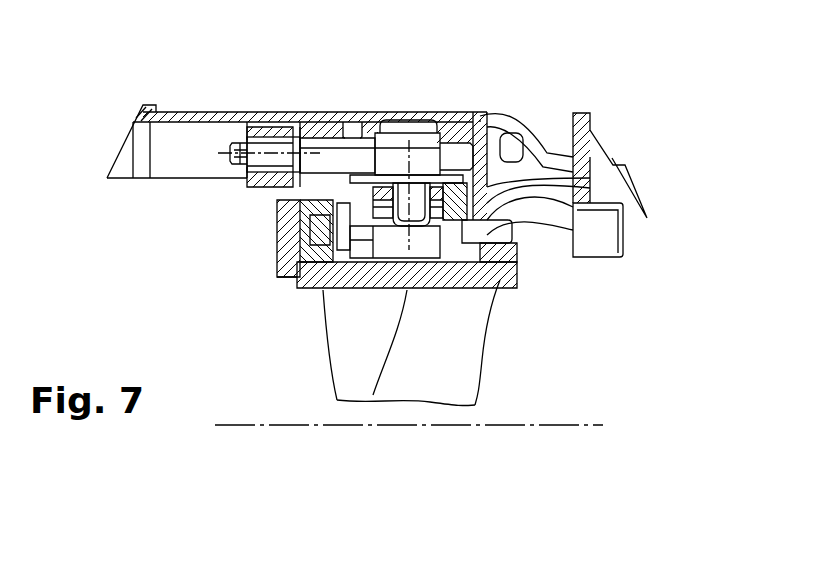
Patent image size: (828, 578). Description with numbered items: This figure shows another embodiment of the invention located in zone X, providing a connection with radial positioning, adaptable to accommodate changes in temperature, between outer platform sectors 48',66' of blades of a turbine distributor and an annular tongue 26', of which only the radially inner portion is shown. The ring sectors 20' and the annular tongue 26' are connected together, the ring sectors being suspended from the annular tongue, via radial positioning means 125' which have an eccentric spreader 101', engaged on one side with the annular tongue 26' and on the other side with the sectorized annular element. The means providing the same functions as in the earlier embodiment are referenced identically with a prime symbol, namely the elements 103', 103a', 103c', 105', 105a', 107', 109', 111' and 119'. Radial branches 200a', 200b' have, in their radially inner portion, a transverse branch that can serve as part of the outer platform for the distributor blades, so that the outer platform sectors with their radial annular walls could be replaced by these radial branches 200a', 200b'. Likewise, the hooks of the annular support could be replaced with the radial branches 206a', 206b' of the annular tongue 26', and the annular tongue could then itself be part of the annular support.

The eccentric spreader 101' is at (337, 88).
The radial branch of the annular tongue 206a' is at (297, 109).
The element 119' is at (269, 113).
The element 109' is at (414, 104).
The element 111' is at (406, 138).
The element 107' is at (438, 137).
The element 103' is at (487, 141).
The annular tongue 26' is at (535, 126).
The radial branch of the annular tongue 206b' is at (535, 148).
The radial branch 200b' is at (639, 165).
The element 105a' is at (451, 192).
The element 105' is at (393, 255).
The radial branch 200a' is at (261, 235).
The element 103a' is at (351, 274).
The radial positioning means 125' is at (217, 335).
The element 103c' is at (326, 365).
The outer platform sectors 48',66' is at (341, 348).
The ring sectors 20' is at (511, 342).
The zone X is at (573, 426).